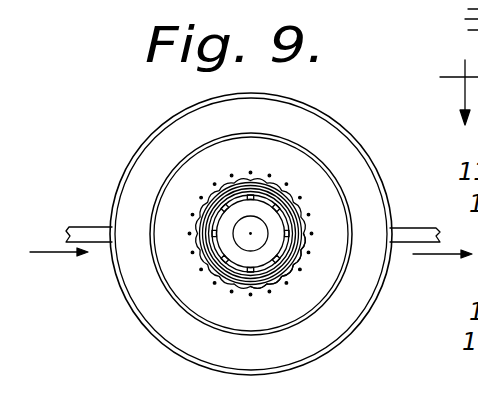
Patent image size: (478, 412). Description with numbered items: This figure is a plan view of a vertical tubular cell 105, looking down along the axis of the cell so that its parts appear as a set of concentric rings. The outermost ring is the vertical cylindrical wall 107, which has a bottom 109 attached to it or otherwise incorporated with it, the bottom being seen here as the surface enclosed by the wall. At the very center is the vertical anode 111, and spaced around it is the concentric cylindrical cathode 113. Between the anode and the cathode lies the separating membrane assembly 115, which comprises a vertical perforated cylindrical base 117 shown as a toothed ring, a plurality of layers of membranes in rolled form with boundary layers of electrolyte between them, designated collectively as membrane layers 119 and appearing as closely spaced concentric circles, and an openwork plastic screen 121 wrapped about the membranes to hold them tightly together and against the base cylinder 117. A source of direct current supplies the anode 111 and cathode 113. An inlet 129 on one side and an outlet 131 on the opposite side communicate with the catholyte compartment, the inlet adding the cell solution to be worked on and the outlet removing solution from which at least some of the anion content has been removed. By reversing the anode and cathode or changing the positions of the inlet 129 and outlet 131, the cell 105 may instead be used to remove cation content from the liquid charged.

The vertical tubular cell 105 is at (148, 130).
The vertical cylindrical wall 107 is at (368, 99).
The bottom 109 is at (143, 285).
The vertical anode 111 is at (250, 228).
The concentric cylindrical cathode 113 is at (163, 185).
The separating membrane assembly 115 is at (208, 291).
The vertical perforated cylindrical base 117 is at (295, 208).
The layers of membranes 119 is at (292, 217).
The openwork plastic screen 121 is at (297, 273).
The inlet 129 is at (90, 227).
The outlet 131 is at (430, 239).